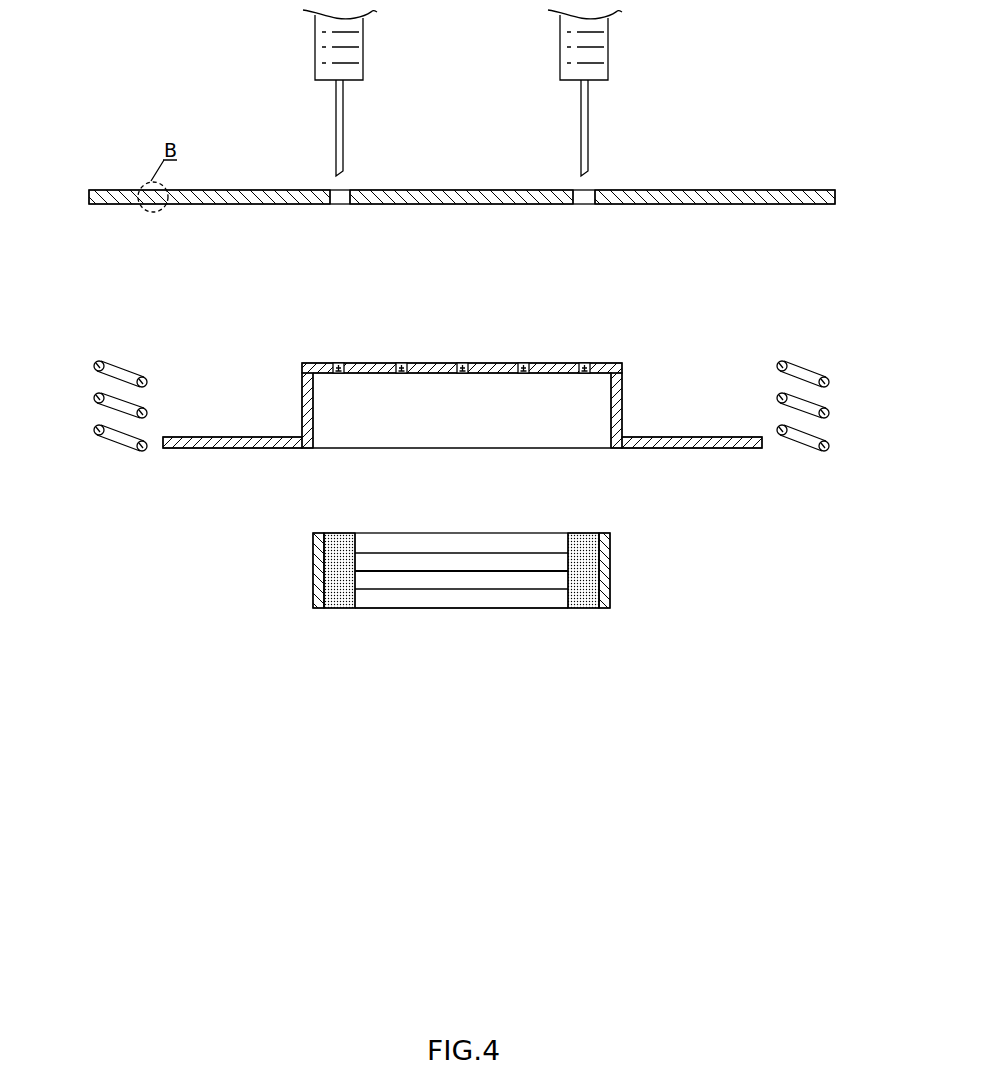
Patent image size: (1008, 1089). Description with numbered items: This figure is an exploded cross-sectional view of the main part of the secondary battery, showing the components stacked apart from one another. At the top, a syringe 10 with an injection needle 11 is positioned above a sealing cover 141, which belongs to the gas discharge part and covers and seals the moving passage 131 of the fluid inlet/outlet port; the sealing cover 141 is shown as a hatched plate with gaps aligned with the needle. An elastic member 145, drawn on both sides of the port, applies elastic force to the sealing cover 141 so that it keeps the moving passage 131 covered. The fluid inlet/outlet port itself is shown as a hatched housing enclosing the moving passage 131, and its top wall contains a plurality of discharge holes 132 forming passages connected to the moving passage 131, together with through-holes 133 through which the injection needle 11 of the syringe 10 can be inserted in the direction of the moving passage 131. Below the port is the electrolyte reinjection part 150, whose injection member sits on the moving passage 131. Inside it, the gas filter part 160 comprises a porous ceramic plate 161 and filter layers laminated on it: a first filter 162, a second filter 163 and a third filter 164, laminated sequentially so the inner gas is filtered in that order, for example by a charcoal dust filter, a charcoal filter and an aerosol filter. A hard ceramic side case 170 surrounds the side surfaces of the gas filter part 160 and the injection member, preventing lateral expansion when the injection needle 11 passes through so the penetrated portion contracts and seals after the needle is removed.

The syringe 10 is at (615, 54).
The injection needle 11 is at (589, 126).
The sealing cover 141 is at (748, 190).
The moving passage 131 is at (595, 401).
The discharge holes 132 is at (523, 362).
The through-holes 133 is at (338, 362).
The elastic member 145 is at (93, 396).
The electrolyte reinjection part 150 is at (581, 543).
The gas filter part 160 is at (461, 617).
The porous ceramic plate 161 is at (390, 651).
The first filter 162 is at (487, 580).
The second filter 163 is at (438, 560).
The third filter 164 is at (390, 542).
The side case 170 is at (611, 570).